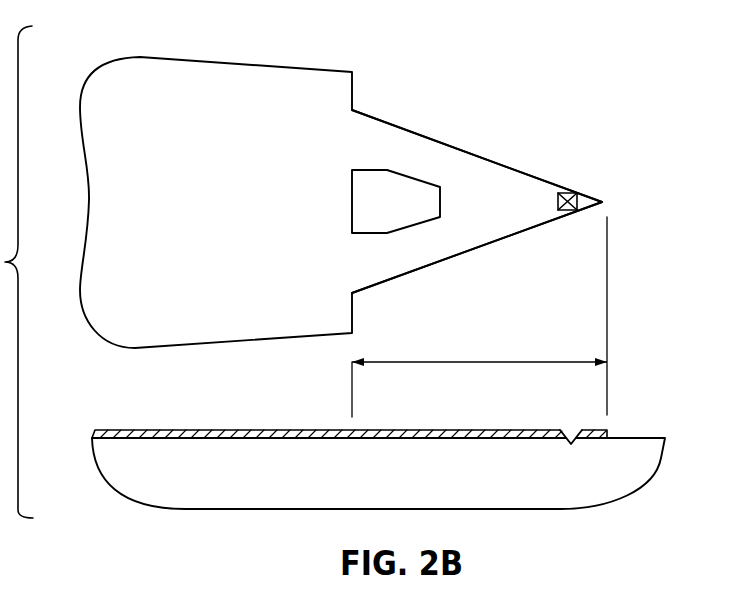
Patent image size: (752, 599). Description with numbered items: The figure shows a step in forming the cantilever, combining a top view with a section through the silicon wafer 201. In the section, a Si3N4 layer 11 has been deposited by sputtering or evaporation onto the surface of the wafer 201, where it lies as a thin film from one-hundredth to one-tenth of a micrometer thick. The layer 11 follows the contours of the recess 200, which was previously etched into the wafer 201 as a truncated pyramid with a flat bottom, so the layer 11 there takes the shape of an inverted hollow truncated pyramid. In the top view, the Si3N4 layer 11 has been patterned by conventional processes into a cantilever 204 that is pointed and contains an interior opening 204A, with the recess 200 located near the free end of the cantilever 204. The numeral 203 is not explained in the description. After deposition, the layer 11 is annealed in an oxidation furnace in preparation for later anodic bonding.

The silicon nitride (Si3N4) cantilever body 203 is at (346, 90).
The cantilever 204 is at (517, 121).
The interior opening 204A is at (351, 182).
The recess 200 is at (577, 193).
The Si3N4 layer 11 is at (180, 430).
The silicon wafer 201 is at (655, 458).